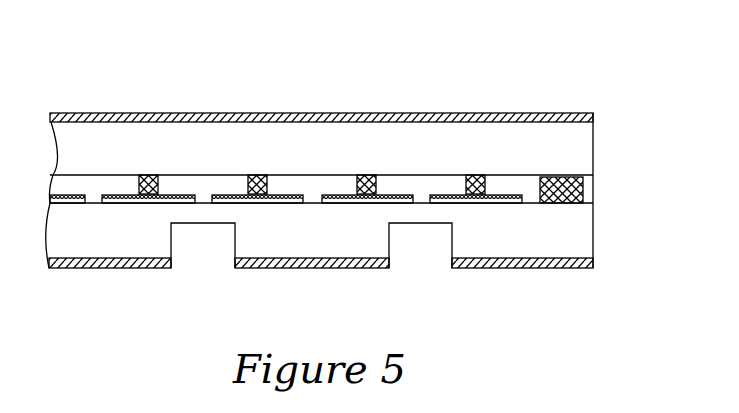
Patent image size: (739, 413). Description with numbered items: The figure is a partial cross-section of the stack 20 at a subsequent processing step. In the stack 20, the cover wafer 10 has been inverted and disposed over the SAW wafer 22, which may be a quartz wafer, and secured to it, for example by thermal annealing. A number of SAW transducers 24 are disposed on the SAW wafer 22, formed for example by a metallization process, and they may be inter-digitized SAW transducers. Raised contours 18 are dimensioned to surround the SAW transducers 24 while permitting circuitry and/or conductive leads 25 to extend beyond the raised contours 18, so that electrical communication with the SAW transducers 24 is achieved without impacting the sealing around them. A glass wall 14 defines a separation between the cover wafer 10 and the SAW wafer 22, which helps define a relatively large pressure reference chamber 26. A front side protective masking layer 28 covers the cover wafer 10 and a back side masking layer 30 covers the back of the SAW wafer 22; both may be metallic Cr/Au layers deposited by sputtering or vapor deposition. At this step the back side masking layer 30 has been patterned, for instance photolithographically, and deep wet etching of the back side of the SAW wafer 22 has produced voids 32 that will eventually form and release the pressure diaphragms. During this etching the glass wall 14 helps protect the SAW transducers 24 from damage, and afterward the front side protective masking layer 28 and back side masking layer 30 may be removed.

The stack 20 is at (114, 76).
The front side protective masking layer 28 is at (133, 113).
The cover wafer 10 is at (306, 140).
The pressure reference chamber 26 is at (205, 180).
The raised contours 18 is at (366, 175).
The glass wall 14 is at (565, 177).
The circuitry and/or conductive leads 25 is at (280, 199).
The SAW transducers 24 is at (95, 199).
The SAW wafer 22 is at (477, 242).
The voids 32 is at (208, 257).
The back side masking layer 30 is at (140, 268).